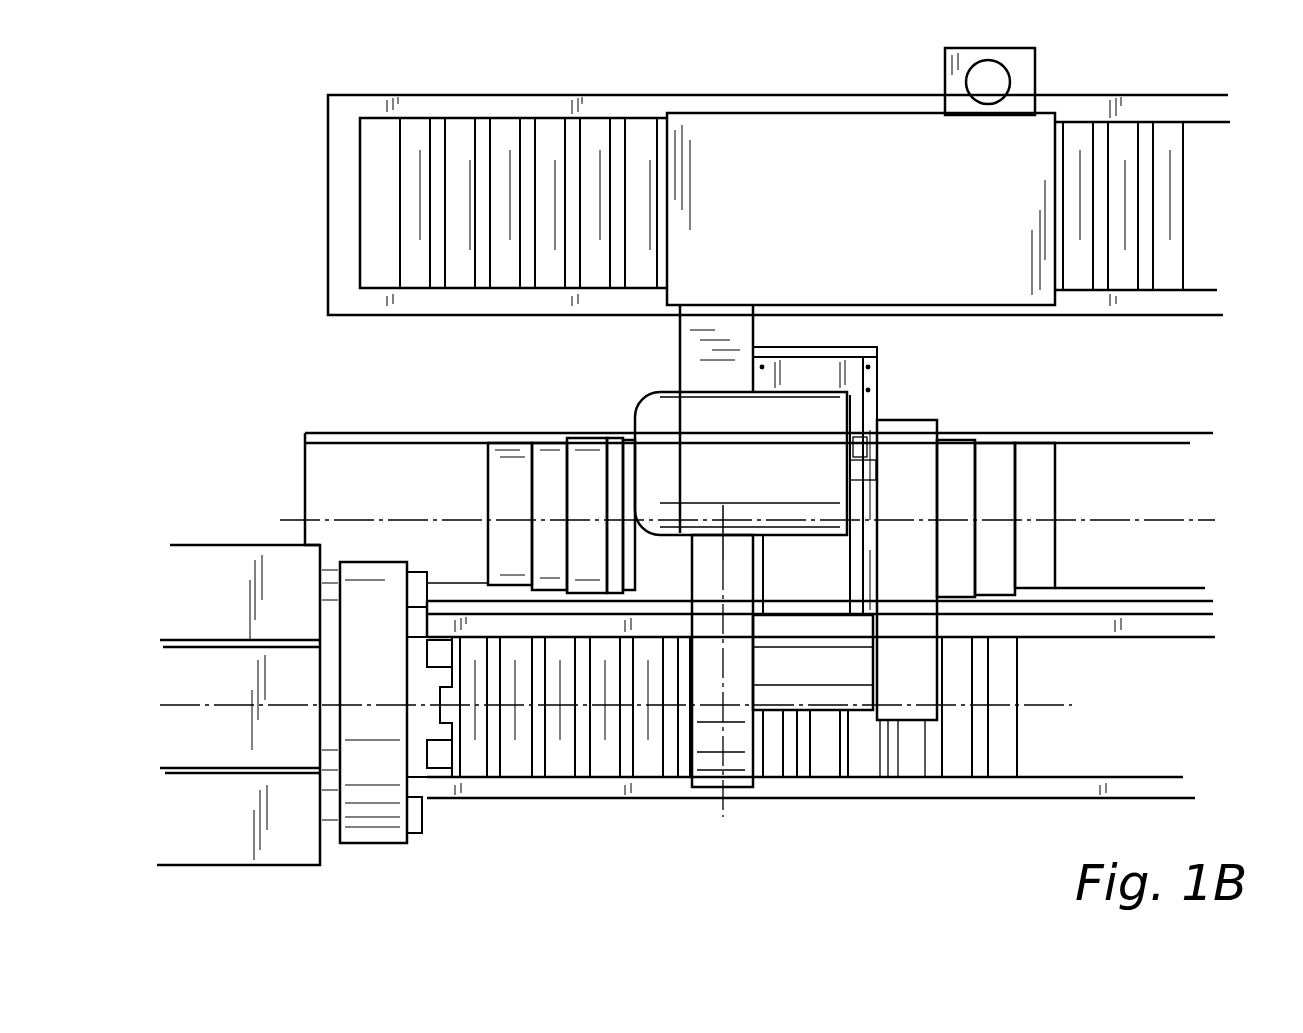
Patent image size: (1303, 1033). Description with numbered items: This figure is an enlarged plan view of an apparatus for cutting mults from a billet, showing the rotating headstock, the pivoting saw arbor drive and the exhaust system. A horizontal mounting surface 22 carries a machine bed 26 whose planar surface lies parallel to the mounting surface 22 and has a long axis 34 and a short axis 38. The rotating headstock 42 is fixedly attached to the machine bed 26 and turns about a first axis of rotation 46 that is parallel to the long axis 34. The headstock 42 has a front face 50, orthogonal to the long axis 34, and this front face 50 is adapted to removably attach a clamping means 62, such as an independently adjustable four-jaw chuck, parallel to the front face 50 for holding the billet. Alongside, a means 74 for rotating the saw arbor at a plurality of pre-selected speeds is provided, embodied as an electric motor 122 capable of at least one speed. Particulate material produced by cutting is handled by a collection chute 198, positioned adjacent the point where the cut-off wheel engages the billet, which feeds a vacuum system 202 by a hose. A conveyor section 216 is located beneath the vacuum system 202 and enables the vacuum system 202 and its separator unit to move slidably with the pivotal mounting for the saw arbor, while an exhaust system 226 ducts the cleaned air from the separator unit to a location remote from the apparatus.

The conveyor section 216 is at (343, 90).
The exhaust system 226 is at (1010, 82).
The vacuum system 202 is at (799, 213).
The collection chute 198 is at (695, 372).
The electric motor 122 is at (827, 422).
The horizontal mounting surface 22 is at (612, 463).
The means for rotating the saw arbor 74 is at (784, 476).
The rotating headstock 42 is at (242, 560).
The clamping means 62 is at (408, 623).
The front face 50 is at (337, 802).
The machine bed 26 is at (592, 787).
The first axis of rotation 46 is at (608, 707).
The short axis 38 is at (722, 807).
The long axis 34 is at (777, 707).